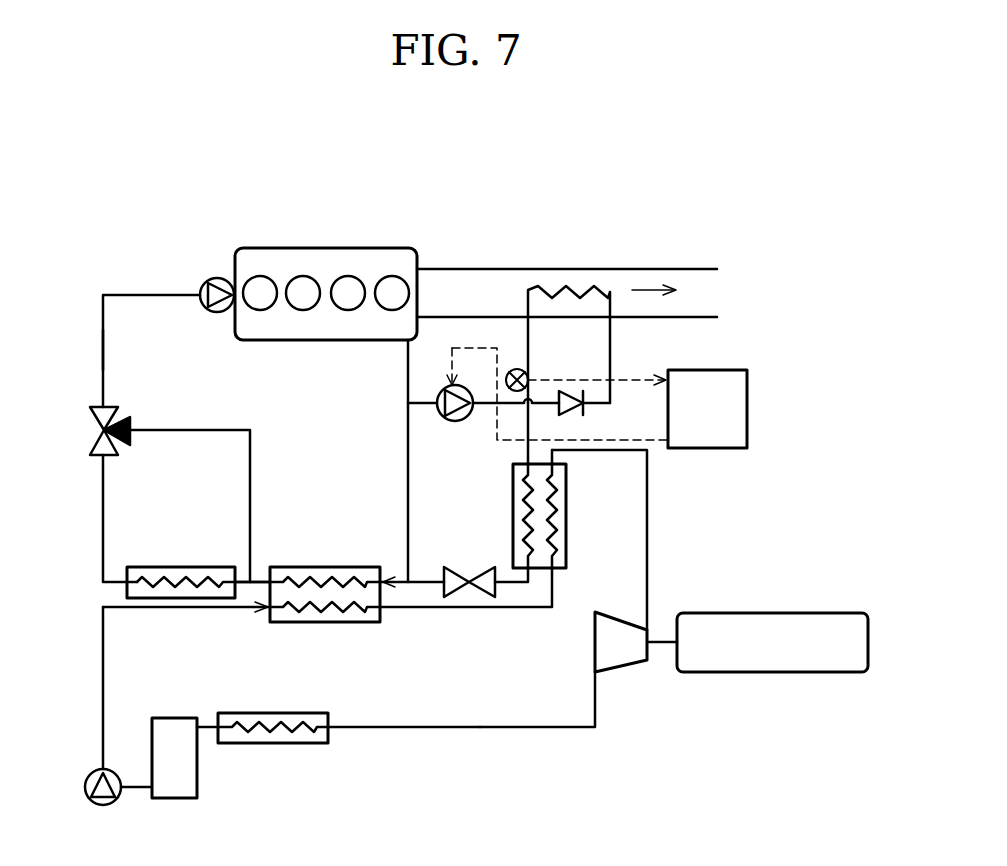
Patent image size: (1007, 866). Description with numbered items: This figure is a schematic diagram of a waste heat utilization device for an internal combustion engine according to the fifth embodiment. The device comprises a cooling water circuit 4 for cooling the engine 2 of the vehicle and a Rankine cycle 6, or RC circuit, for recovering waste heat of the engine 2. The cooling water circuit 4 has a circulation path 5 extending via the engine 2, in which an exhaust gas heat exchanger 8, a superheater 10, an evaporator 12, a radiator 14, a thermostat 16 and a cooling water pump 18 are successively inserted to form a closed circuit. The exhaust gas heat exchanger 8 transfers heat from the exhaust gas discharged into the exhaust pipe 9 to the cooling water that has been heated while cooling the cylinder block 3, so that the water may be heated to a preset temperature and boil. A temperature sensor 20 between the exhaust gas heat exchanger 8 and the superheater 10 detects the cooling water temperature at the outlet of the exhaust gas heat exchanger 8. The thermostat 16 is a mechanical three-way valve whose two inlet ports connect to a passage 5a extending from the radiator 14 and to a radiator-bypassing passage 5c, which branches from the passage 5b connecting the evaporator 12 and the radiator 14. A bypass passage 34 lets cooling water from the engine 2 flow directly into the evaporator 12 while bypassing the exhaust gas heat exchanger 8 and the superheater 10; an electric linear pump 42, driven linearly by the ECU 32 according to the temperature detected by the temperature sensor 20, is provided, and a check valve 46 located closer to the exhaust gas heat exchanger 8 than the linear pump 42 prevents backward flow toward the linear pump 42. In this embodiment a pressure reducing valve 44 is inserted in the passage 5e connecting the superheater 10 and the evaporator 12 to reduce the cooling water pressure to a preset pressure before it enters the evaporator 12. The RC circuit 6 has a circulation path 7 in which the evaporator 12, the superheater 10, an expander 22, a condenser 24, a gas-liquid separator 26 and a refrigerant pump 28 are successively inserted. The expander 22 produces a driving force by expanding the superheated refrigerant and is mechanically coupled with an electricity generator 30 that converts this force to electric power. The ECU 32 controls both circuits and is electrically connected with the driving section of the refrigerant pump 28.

The engine 2 is at (323, 245).
The cylinder block 3 is at (387, 262).
The cooling water circuit 4 is at (131, 292).
The circulation path 5 is at (175, 292).
The passage 5a is at (102, 488).
The passage 5b is at (260, 578).
The radiator-bypassing passage 5c is at (253, 447).
The passage 5e is at (512, 583).
The Rankine cycle 6 is at (415, 730).
The circulation path 7 is at (549, 730).
The exhaust gas heat exchanger 8 is at (547, 288).
The exhaust pipe 9 is at (602, 268).
The superheater 10 is at (567, 492).
The evaporator 12 is at (333, 623).
The radiator 14 is at (182, 567).
The thermostat 16 is at (92, 420).
The cooling water pump 18 is at (220, 278).
The temperature sensor 20 is at (516, 369).
The expander 22 is at (615, 670).
The condenser 24 is at (245, 712).
The gas-liquid separator 26 is at (167, 718).
The refrigerant pump 28 is at (98, 768).
The electricity generator 30 is at (748, 612).
The ECU 32 is at (710, 452).
The bypass passage 34 is at (407, 428).
The linear pump 42 is at (452, 422).
The pressure reducing valve 44 is at (468, 567).
The check valve 46 is at (585, 407).